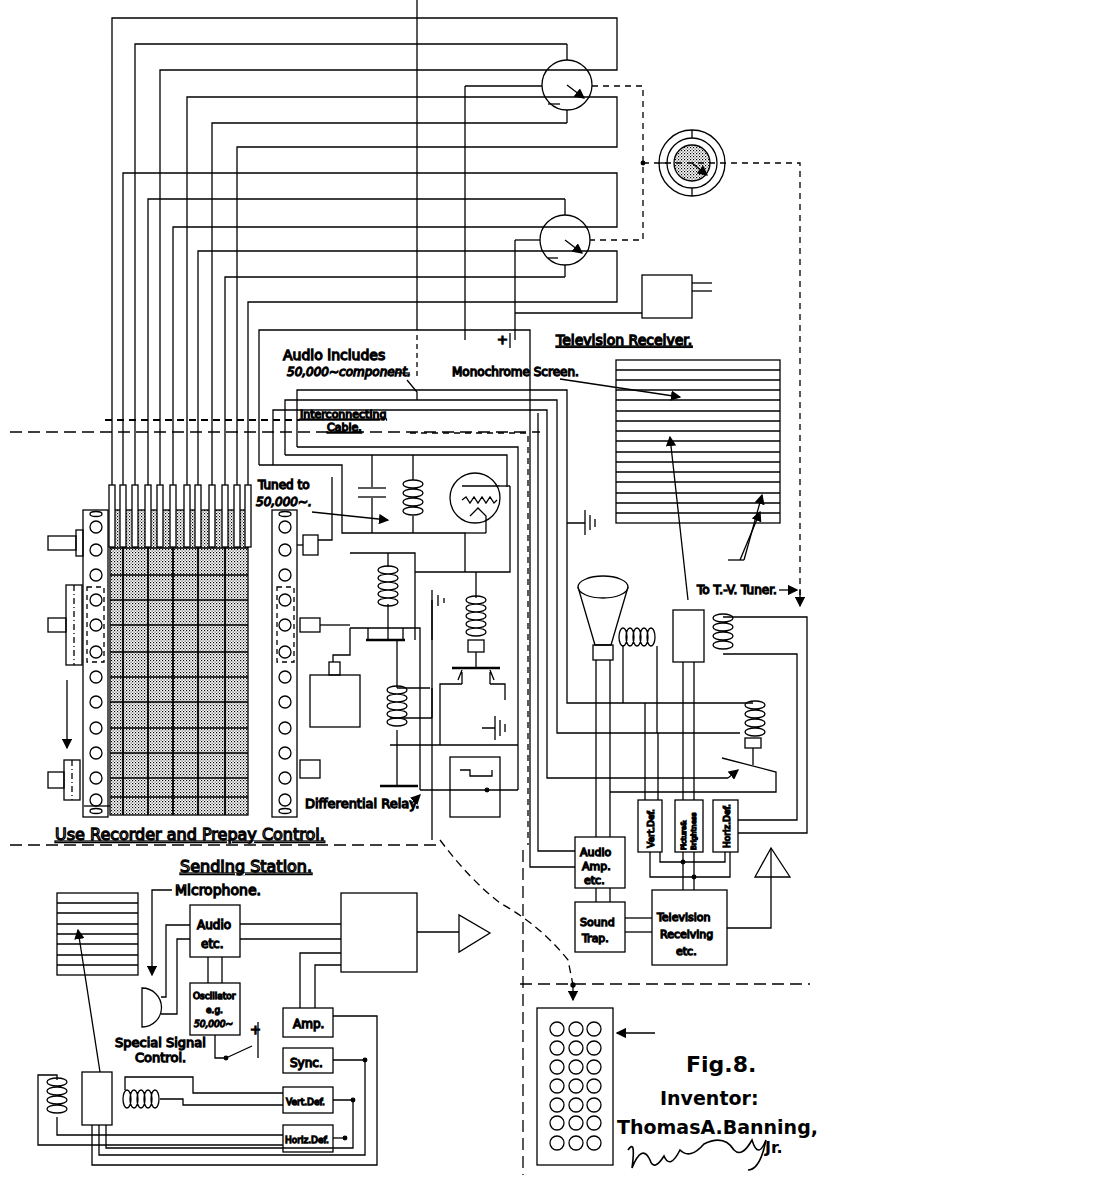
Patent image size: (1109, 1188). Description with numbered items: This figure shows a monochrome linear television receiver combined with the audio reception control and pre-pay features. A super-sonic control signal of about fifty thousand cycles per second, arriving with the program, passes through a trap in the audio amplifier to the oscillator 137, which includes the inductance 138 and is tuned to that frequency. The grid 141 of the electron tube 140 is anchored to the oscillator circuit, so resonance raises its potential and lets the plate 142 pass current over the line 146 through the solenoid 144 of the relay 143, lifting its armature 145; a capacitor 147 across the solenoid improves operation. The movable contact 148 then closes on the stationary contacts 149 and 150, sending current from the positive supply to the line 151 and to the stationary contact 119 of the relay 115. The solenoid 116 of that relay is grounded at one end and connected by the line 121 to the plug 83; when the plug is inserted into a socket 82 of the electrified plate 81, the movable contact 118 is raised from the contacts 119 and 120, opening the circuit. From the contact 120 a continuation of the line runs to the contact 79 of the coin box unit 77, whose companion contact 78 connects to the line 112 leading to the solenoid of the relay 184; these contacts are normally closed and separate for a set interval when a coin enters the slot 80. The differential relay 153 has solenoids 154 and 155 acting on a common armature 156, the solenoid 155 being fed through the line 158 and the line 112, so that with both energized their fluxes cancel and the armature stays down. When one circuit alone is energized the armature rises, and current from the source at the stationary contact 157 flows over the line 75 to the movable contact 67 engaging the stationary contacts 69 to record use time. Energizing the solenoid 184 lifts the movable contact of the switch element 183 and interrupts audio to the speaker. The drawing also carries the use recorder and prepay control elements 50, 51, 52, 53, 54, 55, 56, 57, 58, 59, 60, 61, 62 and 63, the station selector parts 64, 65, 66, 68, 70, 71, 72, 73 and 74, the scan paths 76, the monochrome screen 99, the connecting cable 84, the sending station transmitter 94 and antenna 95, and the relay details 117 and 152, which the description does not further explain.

The prepay control box 50 is at (310, 535).
The switch box 51 is at (314, 759).
The contact 52 is at (288, 753).
The guide rail section 53 is at (87, 590).
The contact block 54 is at (315, 612).
The synchronous motor 55 is at (336, 720).
The motor lead 56 is at (333, 660).
The shaft 57 is at (90, 534).
The lower rail 58 is at (83, 806).
The strip travel direction 59 is at (66, 745).
The upper pulley roller 60 is at (67, 605).
The lower pulley roller 61 is at (64, 766).
The recording strip 62 is at (112, 500).
The bottom rail 63 is at (270, 813).
The station selector dial 64 is at (710, 140).
The dial connection 65 is at (650, 160).
The lower switch drum 66 is at (572, 250).
The movable contact 67 is at (575, 95).
The lower switch arm 68 is at (552, 260).
The stationary contacts 69 is at (550, 106).
The recorder wires 70 is at (412, 199).
The recorder wires 71 is at (410, 45).
The bus wire 72 is at (515, 302).
The main switch box 73 is at (648, 290).
The main switch and rectifier 74 is at (698, 289).
The line 75 is at (466, 160).
The scan paths 76 is at (743, 532).
The coin box unit 77 is at (495, 804).
The coin box contact 78 is at (490, 778).
The coin box contact 79 is at (470, 780).
The coin receiving slot 80 is at (474, 767).
The plate 81 is at (603, 1052).
The sockets 82 is at (596, 1086).
The plug 83 is at (575, 997).
The connecting cable 84 is at (466, 884).
The monochrome transmitter 94 is at (383, 960).
The transmitting antenna 95 is at (470, 940).
The monochrome screen 99 is at (720, 372).
The line 112 is at (563, 475).
The relay 115 is at (484, 605).
The solenoid 116 is at (486, 636).
The relay plunger 117 is at (484, 647).
The movable contact 118 is at (476, 671).
The stationary contact 119 is at (462, 676).
The stationary contact 120 is at (492, 674).
The line 121 is at (430, 822).
The oscillator 137 is at (390, 475).
The inductance 138 is at (416, 497).
The electron tube 140 is at (483, 478).
The grid 141 is at (466, 512).
The plate 142 is at (470, 484).
The relay 143 is at (393, 574).
The solenoid 144 is at (382, 596).
The armature 145 is at (380, 595).
The line 146 is at (463, 571).
The capacitor 147 is at (371, 486).
The movable contact 148 is at (390, 633).
The stationary contact 149 is at (378, 630).
The stationary contact 150 is at (396, 633).
The line 151 is at (433, 638).
The wire 152 is at (411, 677).
The differential relay 153 is at (392, 726).
The solenoid 154 is at (389, 683).
The solenoid 155 is at (398, 746).
The common armature 156 is at (396, 765).
The stationary contact 157 is at (390, 781).
The line 158 is at (490, 745).
The switch element 183 is at (758, 782).
The solenoid 184 is at (770, 694).